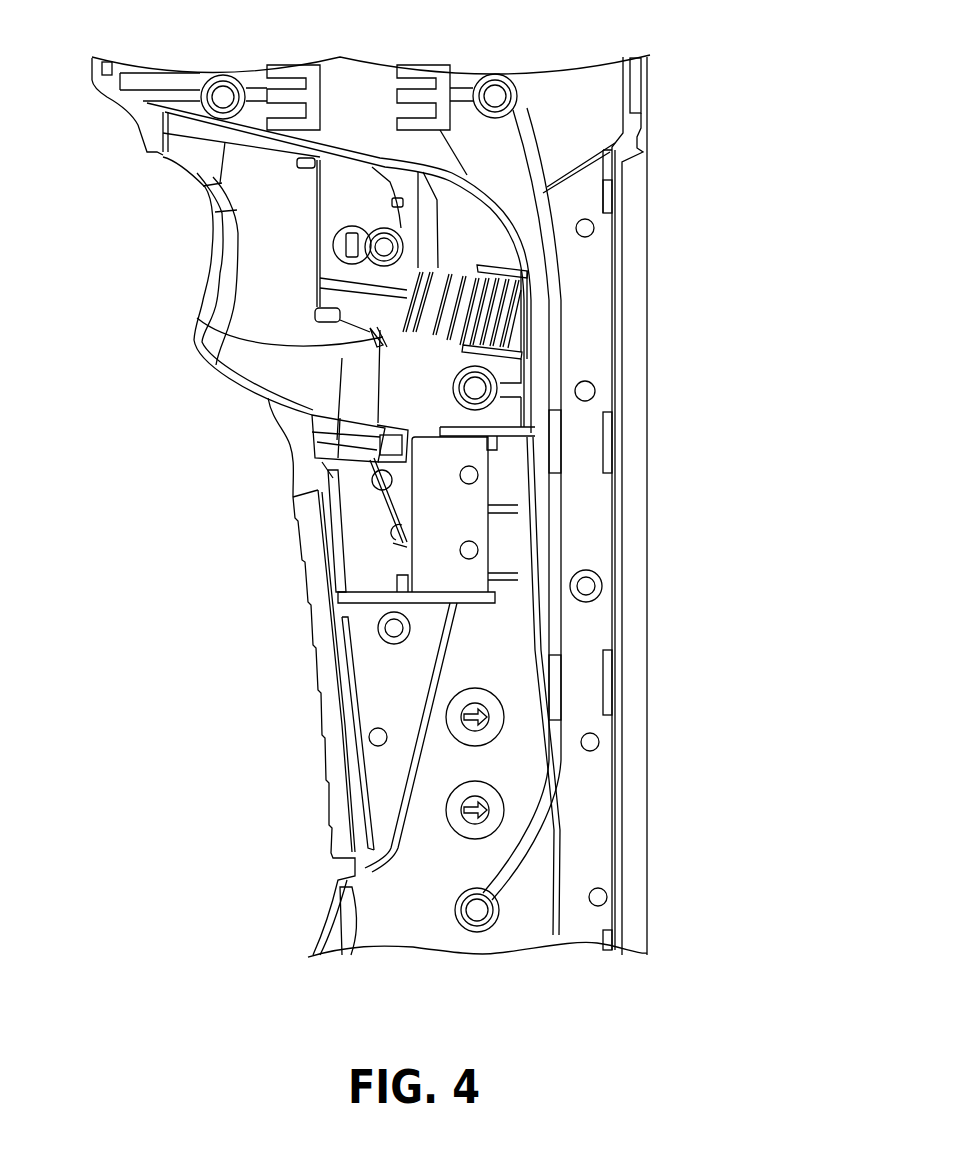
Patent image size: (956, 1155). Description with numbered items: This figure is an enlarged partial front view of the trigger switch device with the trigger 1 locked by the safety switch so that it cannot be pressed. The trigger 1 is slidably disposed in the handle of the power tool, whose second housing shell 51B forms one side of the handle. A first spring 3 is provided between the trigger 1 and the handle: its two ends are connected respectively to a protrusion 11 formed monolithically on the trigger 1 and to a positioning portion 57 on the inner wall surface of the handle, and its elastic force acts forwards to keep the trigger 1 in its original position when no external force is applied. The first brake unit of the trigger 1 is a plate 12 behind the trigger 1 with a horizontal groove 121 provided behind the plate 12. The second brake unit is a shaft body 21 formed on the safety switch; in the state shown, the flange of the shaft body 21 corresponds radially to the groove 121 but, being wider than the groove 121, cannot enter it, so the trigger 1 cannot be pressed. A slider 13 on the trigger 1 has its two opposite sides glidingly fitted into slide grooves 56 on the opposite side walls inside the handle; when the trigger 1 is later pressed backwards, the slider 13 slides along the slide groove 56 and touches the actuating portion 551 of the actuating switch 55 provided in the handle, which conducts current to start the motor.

The trigger 1 is at (248, 273).
The protrusion 11 is at (388, 317).
The plate 12 is at (333, 199).
The groove 121 is at (353, 226).
The shaft body 21 is at (404, 240).
The first spring 3 is at (515, 301).
The positioning portion 57 is at (520, 328).
The second housing shell 51B is at (648, 437).
The actuating switch 55 is at (482, 557).
The actuating portion 551 is at (390, 503).
The slide groove 56 is at (327, 432).
The slider 13 is at (315, 457).